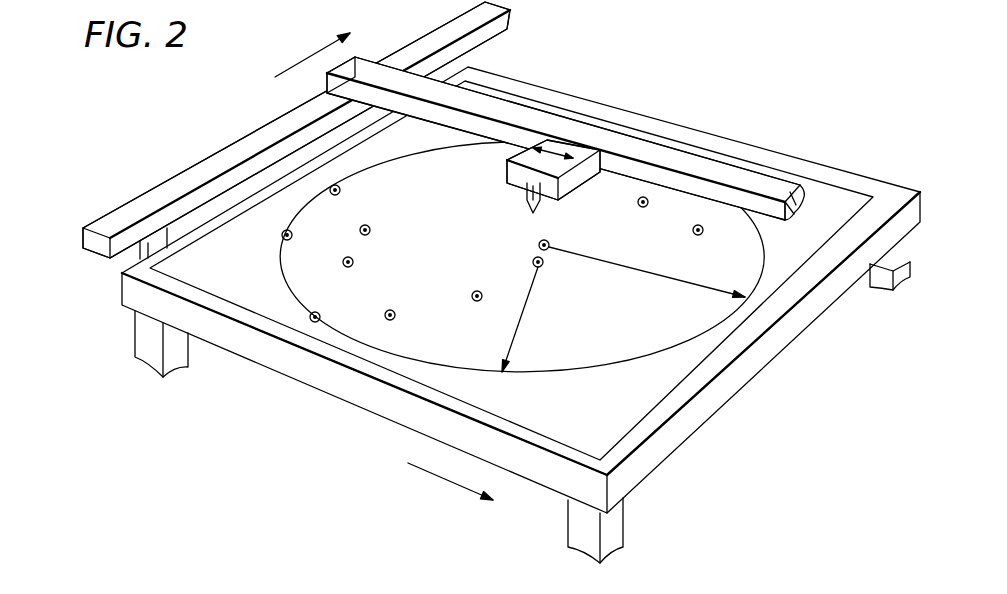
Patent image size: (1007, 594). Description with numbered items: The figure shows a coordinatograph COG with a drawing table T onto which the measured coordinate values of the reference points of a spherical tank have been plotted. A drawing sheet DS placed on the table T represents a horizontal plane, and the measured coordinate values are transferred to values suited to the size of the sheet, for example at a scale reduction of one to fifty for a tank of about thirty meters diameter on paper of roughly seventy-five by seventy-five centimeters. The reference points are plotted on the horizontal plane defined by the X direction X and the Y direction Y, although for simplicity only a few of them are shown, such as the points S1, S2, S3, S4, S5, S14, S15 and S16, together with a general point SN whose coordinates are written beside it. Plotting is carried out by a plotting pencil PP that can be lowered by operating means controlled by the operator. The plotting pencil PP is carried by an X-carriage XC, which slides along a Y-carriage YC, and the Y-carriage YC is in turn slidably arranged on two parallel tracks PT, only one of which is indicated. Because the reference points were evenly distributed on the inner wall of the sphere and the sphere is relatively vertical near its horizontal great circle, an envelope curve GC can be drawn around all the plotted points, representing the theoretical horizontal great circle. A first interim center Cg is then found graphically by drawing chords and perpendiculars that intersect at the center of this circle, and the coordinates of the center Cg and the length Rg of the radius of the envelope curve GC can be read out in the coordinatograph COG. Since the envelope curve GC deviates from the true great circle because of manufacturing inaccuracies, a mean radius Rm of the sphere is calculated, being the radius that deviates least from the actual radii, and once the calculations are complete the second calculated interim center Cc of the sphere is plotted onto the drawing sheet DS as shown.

The table T is at (387, 405).
The drawing sheet DS is at (257, 302).
The envelope curve GC is at (767, 253).
The mean radius Rm is at (647, 272).
The radius of the envelope curve Rg is at (526, 319).
The reference point S14 is at (408, 191).
The reference point SN is at (422, 232).
The reference point S15 is at (305, 240).
The reference point S1 is at (361, 263).
The reference point S16 is at (335, 316).
The reference point S2 is at (406, 316).
The reference point S3 is at (491, 300).
The second calculated interim center Cc is at (558, 240).
The first interim center Cg is at (551, 268).
The reference point S5 is at (657, 208).
The reference point S4 is at (713, 233).
The parallel track PT is at (167, 190).
The coordinatograph COG is at (252, 107).
The Y axis direction Y is at (312, 50).
The X axis direction X is at (450, 478).
The Y-carriage YC is at (510, 110).
The X-carriage XC is at (565, 143).
The plotting pencil PP is at (540, 206).